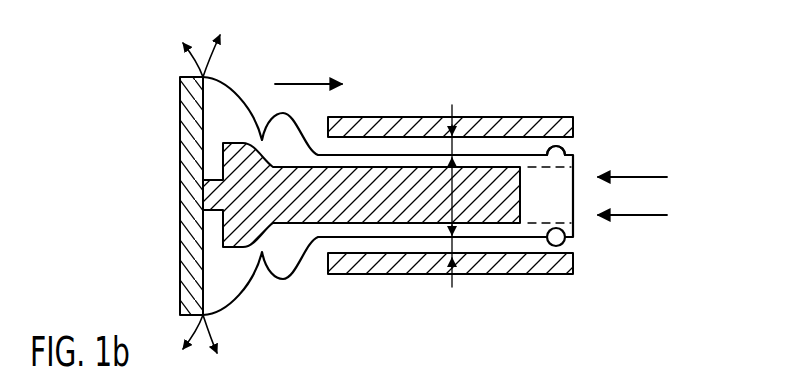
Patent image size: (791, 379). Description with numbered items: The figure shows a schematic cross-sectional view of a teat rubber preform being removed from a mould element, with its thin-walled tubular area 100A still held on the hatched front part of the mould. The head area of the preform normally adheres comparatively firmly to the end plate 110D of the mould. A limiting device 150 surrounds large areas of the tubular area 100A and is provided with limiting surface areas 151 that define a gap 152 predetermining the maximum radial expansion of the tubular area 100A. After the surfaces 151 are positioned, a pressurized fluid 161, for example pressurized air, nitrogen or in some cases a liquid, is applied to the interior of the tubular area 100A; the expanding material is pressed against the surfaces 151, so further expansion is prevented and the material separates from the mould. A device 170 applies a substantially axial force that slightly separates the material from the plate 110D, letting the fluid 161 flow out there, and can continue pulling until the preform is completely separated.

The end plate 110D is at (180, 108).
The tubular area 100A is at (505, 237).
The limiting device 150 is at (554, 91).
The limiting surface areas 151 is at (553, 147).
The gap 152 is at (453, 150).
The pressurized fluid 161 is at (445, 182).
The device 170 is at (318, 82).